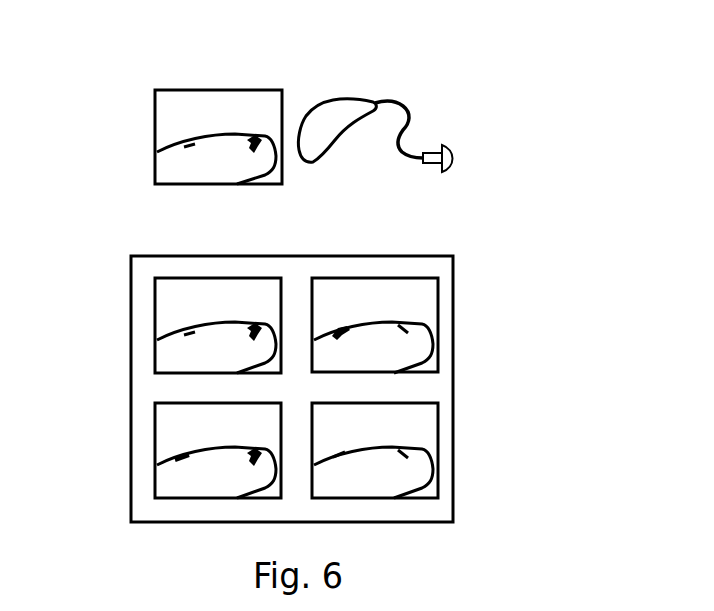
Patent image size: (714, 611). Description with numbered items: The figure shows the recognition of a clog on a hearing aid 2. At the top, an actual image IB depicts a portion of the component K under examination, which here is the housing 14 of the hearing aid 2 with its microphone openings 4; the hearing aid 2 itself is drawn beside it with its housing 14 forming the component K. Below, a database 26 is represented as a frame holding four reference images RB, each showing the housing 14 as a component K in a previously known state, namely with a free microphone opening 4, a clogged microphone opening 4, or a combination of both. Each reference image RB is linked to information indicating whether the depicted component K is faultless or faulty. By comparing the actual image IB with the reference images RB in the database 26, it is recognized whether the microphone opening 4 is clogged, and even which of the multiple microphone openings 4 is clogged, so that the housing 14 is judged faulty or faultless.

The actual image IB is at (158, 90).
The component K is at (213, 130).
The microphone opening 4 is at (186, 137).
The housing 14 is at (337, 130).
The hearing aid 2 is at (460, 105).
The database 26 is at (148, 256).
The reference image RB is at (155, 327).